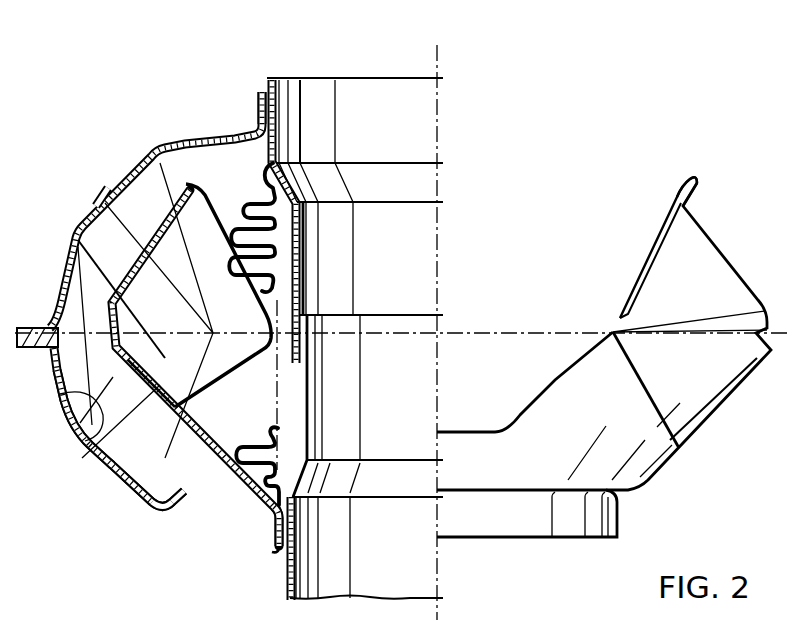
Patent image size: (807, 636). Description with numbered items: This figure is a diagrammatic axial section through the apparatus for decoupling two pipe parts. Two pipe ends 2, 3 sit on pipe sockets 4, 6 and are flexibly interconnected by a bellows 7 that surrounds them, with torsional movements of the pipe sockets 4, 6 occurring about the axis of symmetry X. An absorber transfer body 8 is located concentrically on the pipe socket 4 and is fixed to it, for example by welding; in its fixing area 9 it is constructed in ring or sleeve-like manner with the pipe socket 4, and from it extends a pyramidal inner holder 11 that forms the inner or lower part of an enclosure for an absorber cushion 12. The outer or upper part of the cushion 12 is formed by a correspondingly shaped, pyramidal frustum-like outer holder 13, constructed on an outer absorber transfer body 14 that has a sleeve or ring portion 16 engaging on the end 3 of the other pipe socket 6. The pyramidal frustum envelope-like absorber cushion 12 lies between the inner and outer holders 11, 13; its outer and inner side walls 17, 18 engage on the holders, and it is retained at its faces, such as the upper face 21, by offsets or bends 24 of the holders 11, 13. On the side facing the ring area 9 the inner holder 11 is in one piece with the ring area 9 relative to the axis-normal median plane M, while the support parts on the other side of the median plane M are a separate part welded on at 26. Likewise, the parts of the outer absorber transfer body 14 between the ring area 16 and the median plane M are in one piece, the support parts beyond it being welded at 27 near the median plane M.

The pipe end 2 is at (278, 578).
The pipe end 3 is at (267, 77).
The pipe socket 4 is at (300, 548).
The pipe socket 6 is at (302, 172).
The bellows 7 is at (248, 204).
The absorber transfer body 8 is at (110, 457).
The fixing area 9 is at (270, 523).
The inner holder 11 is at (106, 208).
The absorber cushion 12 is at (140, 463).
The outer holder 13 is at (72, 440).
The outer absorber transfer body 14 is at (73, 223).
The sleeve or ring portion 16 is at (258, 124).
The outer side wall 17 is at (138, 500).
The inner side wall 18 is at (163, 497).
The upper face 21 is at (80, 393).
The offset or bend 24 is at (692, 195).
The welded connection 26 is at (85, 458).
The welded connection 27 is at (32, 328).
The axis of symmetry X is at (440, 62).
The axis-normal median plane M is at (782, 330).